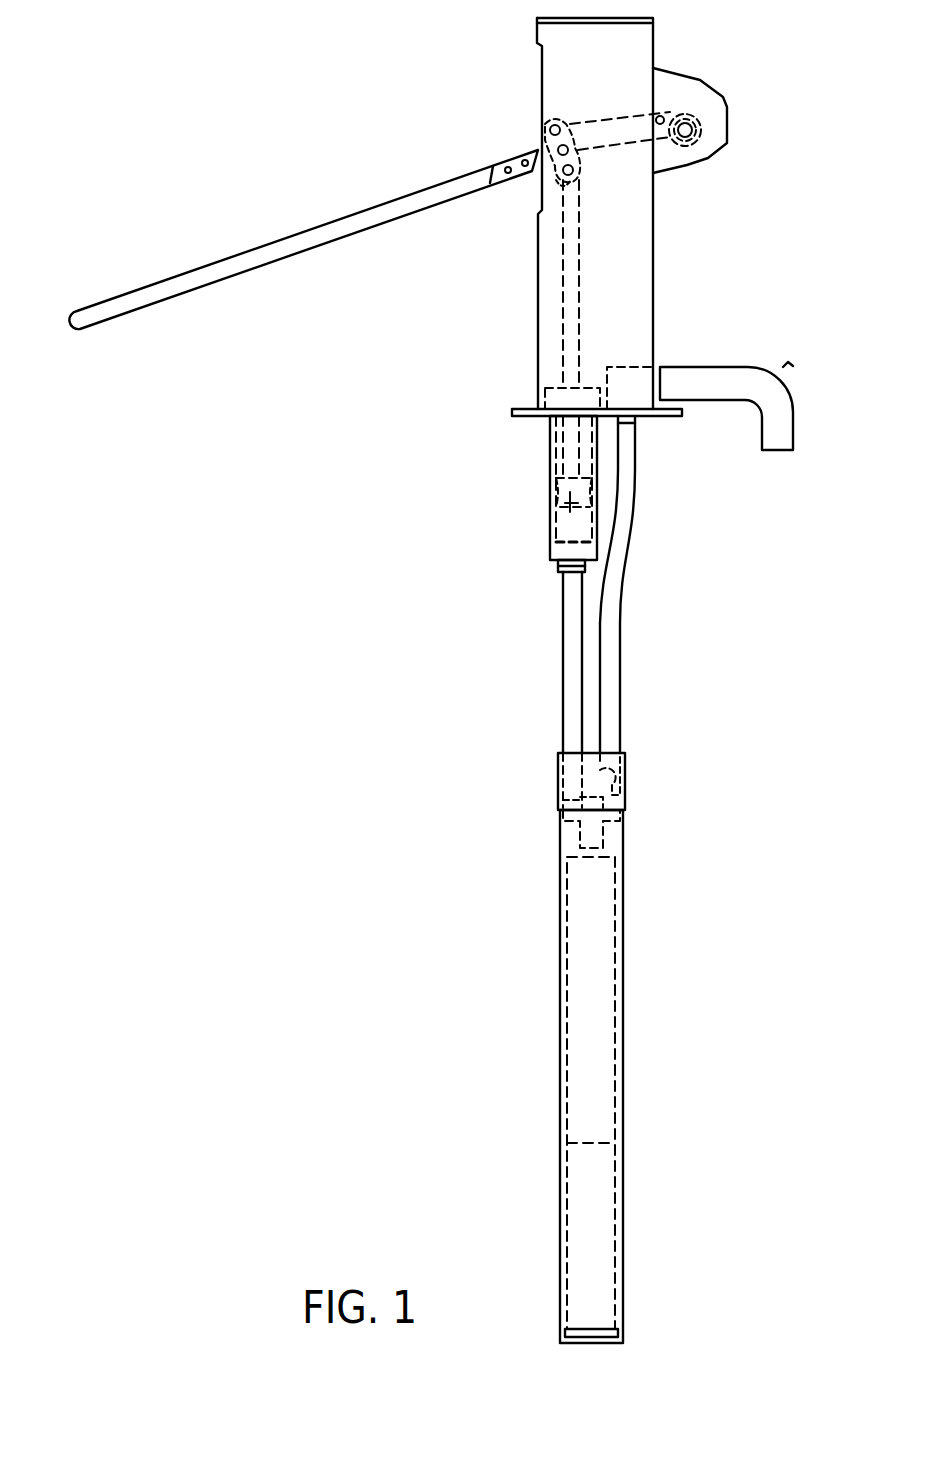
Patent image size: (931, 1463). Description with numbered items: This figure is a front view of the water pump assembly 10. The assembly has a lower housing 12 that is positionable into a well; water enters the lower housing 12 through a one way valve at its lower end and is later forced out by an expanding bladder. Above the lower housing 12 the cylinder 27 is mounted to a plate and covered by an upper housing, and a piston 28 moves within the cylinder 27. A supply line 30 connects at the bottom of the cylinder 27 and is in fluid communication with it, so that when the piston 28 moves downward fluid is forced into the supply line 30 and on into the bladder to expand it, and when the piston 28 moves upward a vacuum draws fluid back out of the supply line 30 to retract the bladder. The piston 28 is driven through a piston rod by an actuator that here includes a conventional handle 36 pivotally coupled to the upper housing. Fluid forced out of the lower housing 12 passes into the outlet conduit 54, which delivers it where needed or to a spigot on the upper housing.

The water pump assembly 10 is at (248, 530).
The lower housing 12 is at (655, 1056).
The cylinder 27 is at (550, 447).
The piston 28 is at (572, 503).
The supply line 30 is at (572, 668).
The handle 36 is at (193, 283).
The outlet conduit 54 is at (612, 618).